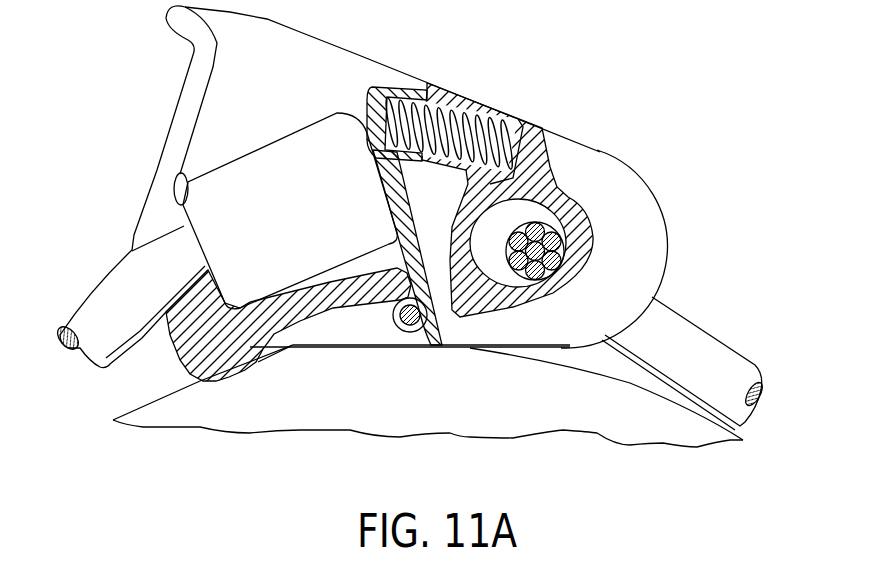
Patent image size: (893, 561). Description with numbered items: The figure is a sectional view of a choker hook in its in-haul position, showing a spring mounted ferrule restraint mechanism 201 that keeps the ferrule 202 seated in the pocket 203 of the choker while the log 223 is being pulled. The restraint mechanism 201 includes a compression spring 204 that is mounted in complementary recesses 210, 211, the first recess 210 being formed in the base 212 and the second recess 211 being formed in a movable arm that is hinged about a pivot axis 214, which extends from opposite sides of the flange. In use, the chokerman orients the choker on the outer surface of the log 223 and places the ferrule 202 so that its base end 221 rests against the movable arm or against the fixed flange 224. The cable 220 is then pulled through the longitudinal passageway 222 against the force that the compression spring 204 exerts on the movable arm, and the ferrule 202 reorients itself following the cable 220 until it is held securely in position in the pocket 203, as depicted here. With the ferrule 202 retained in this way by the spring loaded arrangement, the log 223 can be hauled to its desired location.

The ferrule restraint mechanism 201 is at (466, 83).
The ferrule 202 is at (273, 143).
The pocket 203 is at (174, 178).
The compression spring 204 is at (455, 108).
The recess 210 is at (548, 190).
The recess 211 is at (433, 105).
The base 212 is at (550, 160).
The pivot axis 214 is at (440, 322).
The cable 220 is at (683, 310).
The base end 221 is at (370, 120).
The longitudinal passageway 222 is at (182, 113).
The log 223 is at (562, 419).
The fixed flange 224 is at (310, 320).